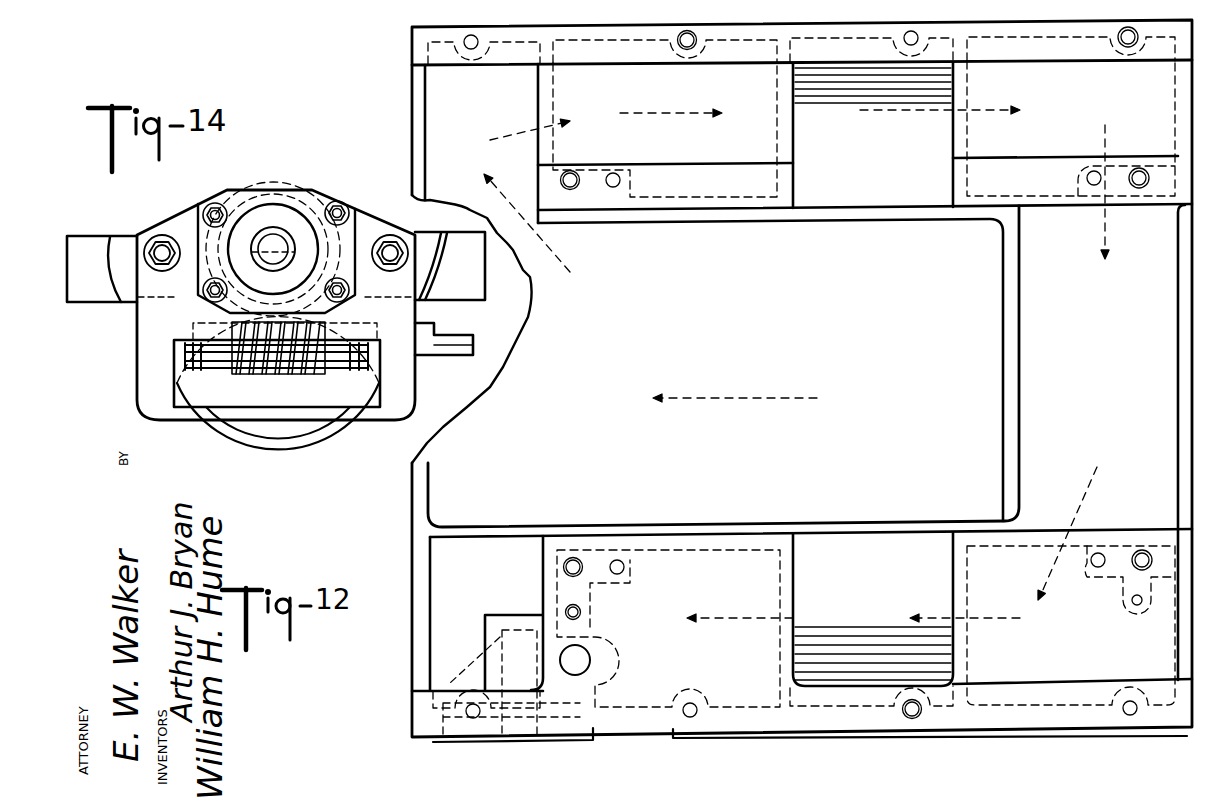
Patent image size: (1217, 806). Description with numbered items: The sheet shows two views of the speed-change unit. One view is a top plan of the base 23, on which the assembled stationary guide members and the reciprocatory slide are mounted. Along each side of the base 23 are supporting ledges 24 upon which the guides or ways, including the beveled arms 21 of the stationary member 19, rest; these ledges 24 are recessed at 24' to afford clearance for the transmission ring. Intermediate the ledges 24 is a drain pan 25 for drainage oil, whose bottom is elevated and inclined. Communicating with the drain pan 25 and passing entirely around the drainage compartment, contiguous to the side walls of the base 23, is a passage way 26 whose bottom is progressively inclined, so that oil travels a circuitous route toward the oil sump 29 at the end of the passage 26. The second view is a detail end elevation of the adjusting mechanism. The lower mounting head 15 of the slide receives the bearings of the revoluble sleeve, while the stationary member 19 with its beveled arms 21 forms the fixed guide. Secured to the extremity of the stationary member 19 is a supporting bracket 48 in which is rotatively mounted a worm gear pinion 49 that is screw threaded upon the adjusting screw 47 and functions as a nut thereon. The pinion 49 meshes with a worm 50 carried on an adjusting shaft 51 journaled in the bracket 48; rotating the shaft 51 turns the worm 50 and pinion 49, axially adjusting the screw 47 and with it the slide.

In FIG. 14, the lower mounting head 15 is at (283, 440).
In FIG. 14, the stationary member 19 is at (102, 303).
In FIG. 14, the beveled arms 21 is at (126, 244).
In FIG. 12, the base 23 is at (413, 79).
In FIG. 12, the ledges 24 is at (811, 384).
In FIG. 12, the recesses 24' is at (873, 374).
In FIG. 12, the drain pan 25 is at (723, 366).
In FIG. 12, the passage way 26 is at (1083, 650).
In FIG. 12, the oil sump 29 is at (580, 658).
In FIG. 14, the screw 47 is at (268, 245).
In FIG. 14, the supporting bracket 48 is at (360, 217).
In FIG. 14, the worm gear pinion 49 is at (282, 200).
In FIG. 14, the worm 50 is at (271, 371).
In FIG. 14, the adjusting shaft 51 is at (433, 357).